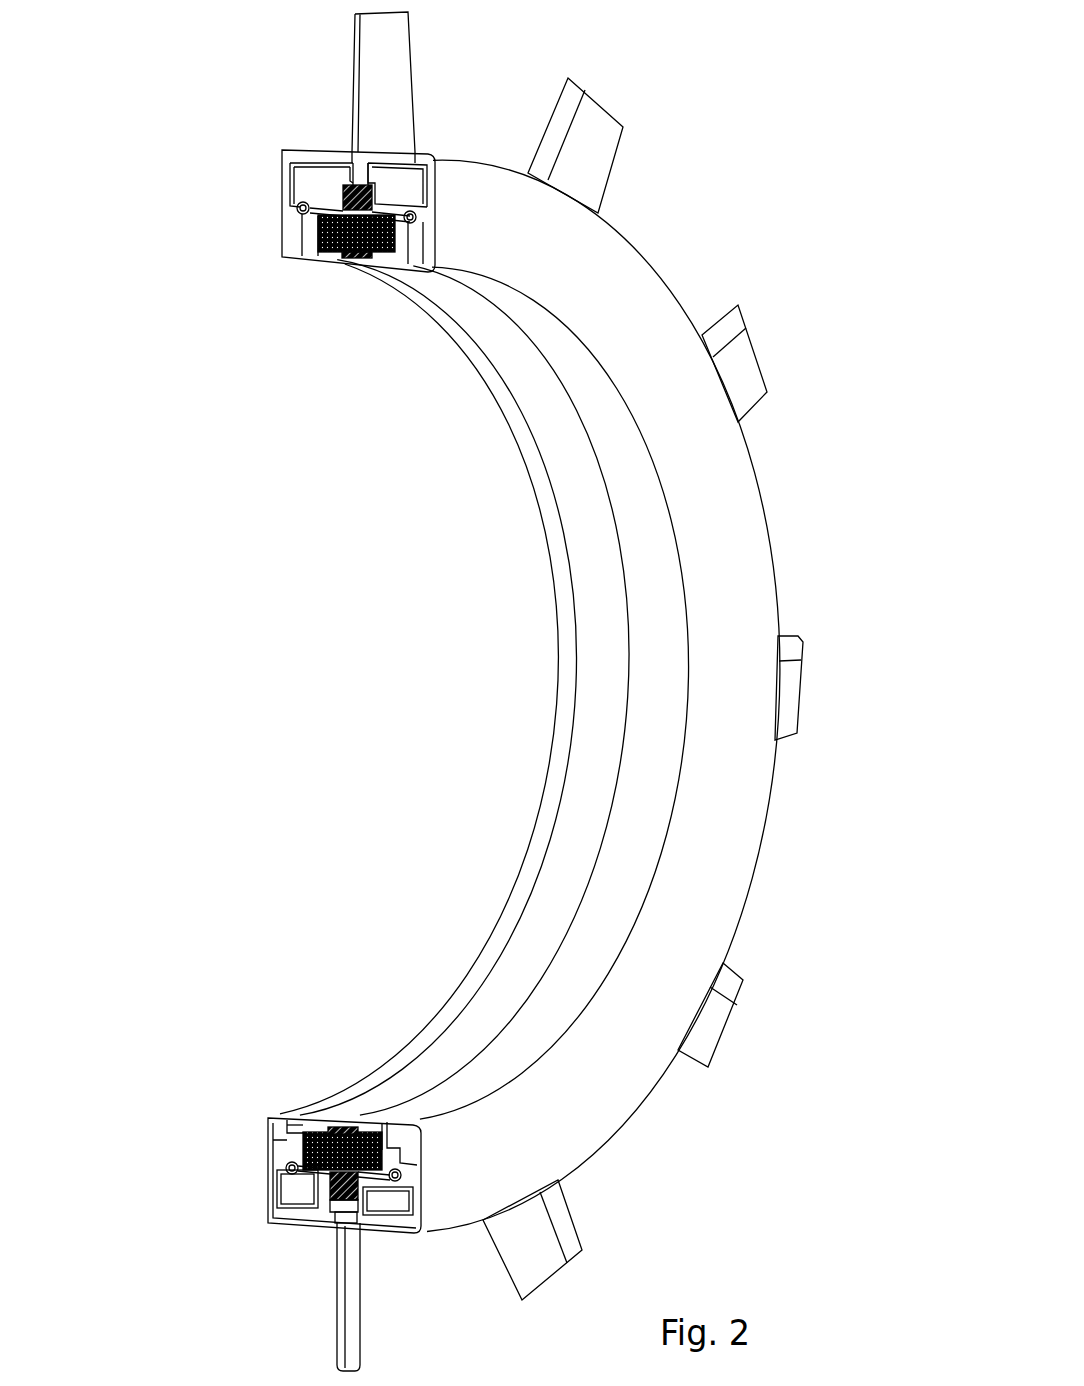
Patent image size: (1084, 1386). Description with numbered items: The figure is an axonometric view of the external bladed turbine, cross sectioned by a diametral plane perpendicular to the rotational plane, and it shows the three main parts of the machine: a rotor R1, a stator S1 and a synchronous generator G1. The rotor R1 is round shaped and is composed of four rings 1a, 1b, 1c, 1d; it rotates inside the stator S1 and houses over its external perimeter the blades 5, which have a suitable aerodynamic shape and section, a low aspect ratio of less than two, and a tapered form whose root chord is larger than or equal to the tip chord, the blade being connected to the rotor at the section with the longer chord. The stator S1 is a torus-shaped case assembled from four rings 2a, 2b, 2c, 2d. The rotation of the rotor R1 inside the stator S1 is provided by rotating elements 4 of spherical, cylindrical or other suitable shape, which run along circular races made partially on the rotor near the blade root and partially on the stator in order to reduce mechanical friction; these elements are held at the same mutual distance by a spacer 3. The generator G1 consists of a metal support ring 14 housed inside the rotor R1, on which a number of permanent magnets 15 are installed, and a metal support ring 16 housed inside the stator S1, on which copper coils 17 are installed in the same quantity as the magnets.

The rotor ring 1a is at (210, 241).
The rotor ring 1b is at (246, 152).
The rotor ring 1c is at (303, 94).
The rotor ring 1d is at (481, 103).
The rotor R1 is at (214, 154).
The spacer 3 is at (330, 311).
The rotating elements 4 is at (408, 218).
The blades 5 is at (410, 77).
The stator S1 is at (530, 695).
The synchronous generator G1 is at (225, 884).
The metal support ring 16 is at (229, 955).
The copper coils 17 is at (183, 970).
The stator ring 2a is at (206, 1217).
The stator ring 2b is at (199, 1028).
The stator ring 2c is at (342, 984).
The stator ring 2d is at (416, 971).
The permanent magnets 15 is at (254, 1262).
The metal support ring 14 is at (422, 1286).